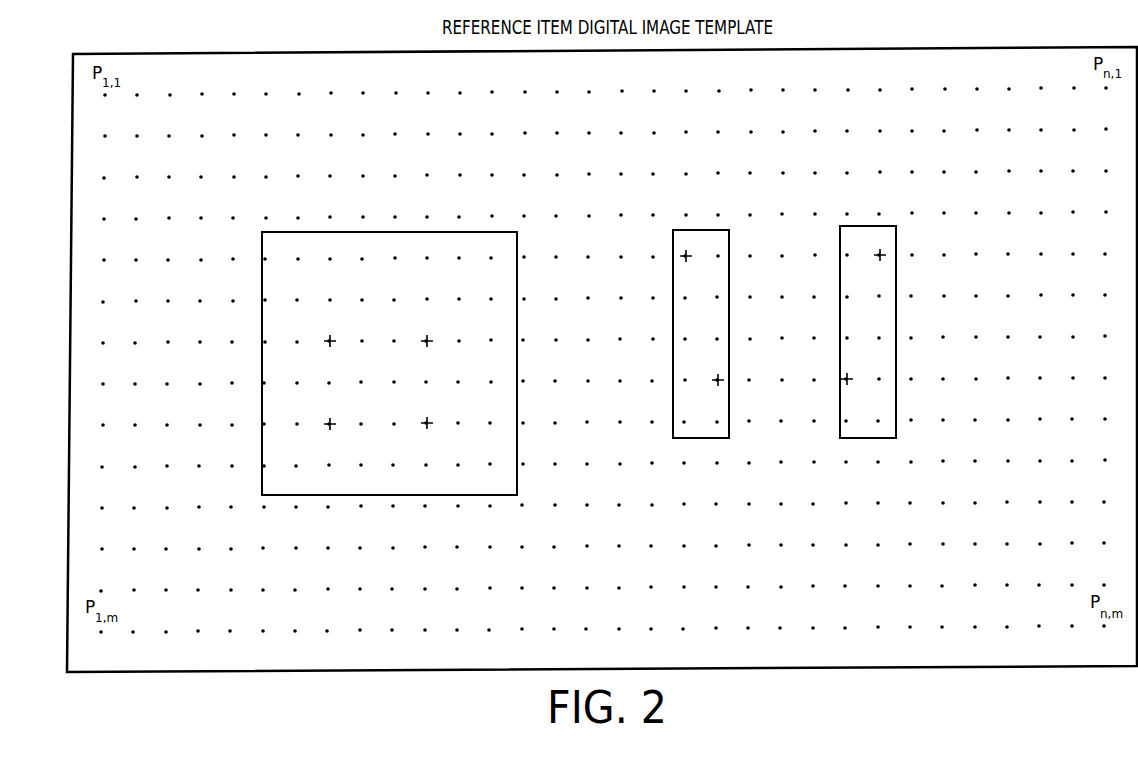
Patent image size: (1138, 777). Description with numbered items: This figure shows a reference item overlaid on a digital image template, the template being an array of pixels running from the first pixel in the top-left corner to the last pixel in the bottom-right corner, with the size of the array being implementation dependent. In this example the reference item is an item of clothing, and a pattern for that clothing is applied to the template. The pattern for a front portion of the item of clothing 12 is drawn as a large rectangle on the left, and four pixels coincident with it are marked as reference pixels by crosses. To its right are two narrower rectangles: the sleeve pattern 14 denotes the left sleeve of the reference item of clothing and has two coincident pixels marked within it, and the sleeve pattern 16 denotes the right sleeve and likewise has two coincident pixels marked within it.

The pattern for a front portion of the item of clothing 12 is at (517, 274).
The left sleeve pattern 14 is at (729, 273).
The right sleeve pattern 16 is at (896, 273).